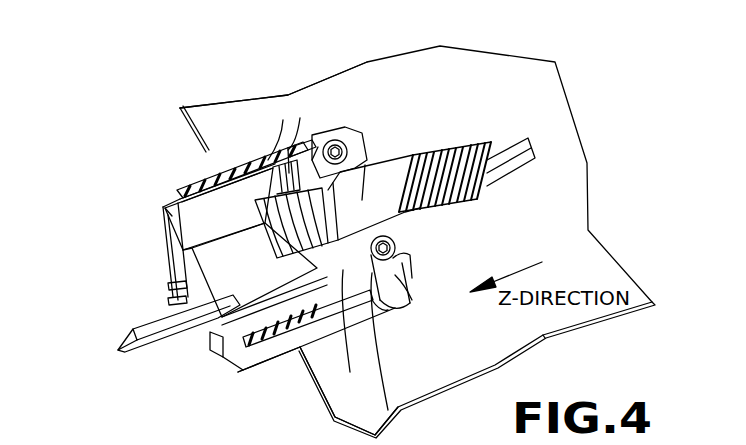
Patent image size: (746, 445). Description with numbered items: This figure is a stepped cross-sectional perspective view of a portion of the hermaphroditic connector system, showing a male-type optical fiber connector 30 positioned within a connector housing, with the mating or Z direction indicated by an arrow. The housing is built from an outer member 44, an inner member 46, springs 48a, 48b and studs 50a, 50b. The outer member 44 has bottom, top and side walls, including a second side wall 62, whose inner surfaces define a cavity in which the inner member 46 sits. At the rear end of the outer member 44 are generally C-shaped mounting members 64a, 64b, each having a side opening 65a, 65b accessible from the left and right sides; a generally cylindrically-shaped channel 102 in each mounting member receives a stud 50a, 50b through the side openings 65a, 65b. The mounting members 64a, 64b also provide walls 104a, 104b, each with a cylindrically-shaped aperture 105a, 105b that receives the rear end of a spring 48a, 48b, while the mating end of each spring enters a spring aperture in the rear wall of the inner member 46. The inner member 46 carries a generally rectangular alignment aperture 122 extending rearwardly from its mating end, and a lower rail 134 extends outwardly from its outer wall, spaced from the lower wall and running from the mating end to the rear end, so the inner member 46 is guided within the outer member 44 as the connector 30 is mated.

The male-type optical fiber connector 30 is at (377, 195).
The outer member 44 is at (183, 187).
The inner member 46 is at (167, 207).
The spring 48a is at (346, 285).
The spring 48b is at (262, 150).
The stud 50a is at (400, 247).
The stud 50b is at (332, 130).
The second side wall 62 is at (268, 350).
The mounting member 64a is at (397, 258).
The mounting member 64b is at (360, 150).
The side opening 65a is at (393, 308).
The side opening 65b is at (318, 147).
The cylindrically-shaped channel 102 is at (393, 305).
The wall 104a is at (358, 305).
The wall 104b is at (283, 120).
The cylindrically-shaped aperture 105a is at (397, 412).
The cylindrically-shaped aperture 105b is at (273, 147).
The alignment aperture 122 is at (163, 247).
The lower rail 134 is at (226, 365).